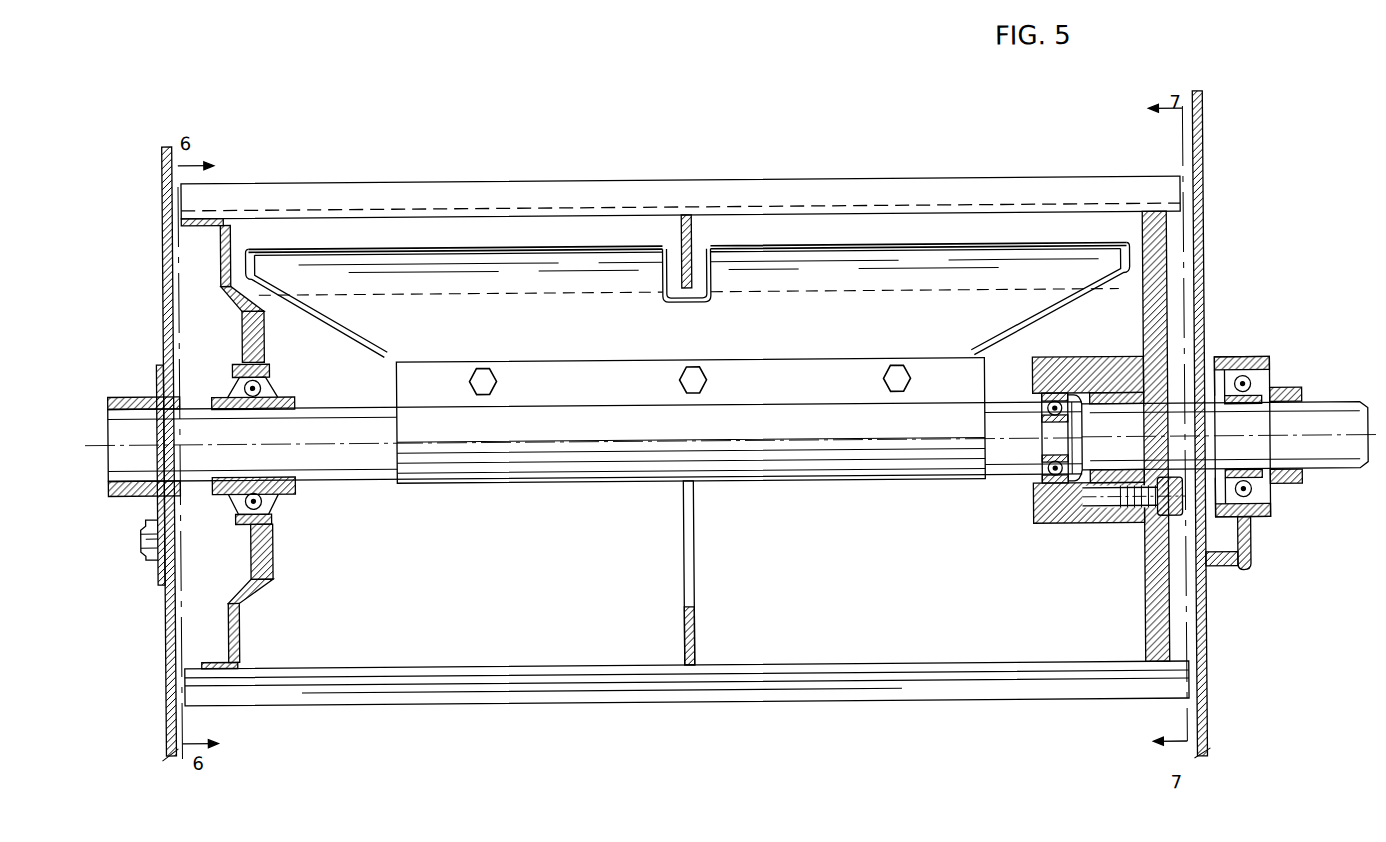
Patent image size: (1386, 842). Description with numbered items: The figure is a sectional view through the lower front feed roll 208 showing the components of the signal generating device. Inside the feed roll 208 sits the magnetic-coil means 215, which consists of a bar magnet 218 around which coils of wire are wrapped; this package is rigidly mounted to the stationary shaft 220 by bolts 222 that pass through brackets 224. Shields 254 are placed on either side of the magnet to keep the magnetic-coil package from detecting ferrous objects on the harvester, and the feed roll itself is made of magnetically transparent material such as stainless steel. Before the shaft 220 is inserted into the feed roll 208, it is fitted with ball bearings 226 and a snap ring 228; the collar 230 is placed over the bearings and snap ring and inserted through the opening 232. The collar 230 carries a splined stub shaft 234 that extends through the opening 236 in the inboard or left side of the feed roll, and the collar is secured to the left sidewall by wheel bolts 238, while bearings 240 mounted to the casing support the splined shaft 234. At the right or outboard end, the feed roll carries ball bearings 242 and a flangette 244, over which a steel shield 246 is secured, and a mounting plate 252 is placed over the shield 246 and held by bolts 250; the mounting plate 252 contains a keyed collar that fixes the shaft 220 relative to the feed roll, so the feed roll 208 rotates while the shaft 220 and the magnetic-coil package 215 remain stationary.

The feed roll 208 is at (1086, 180).
The magnetic-coil means 215 is at (808, 204).
The bar magnet 218 is at (612, 294).
The stationary shaft 220 is at (584, 442).
The bolts 222 is at (497, 380).
The brackets 224 is at (690, 421).
The ball bearings 226 is at (1040, 482).
The snap ring 228 is at (1070, 488).
The collar 230 is at (1105, 334).
The opening 232 is at (230, 380).
The splined stub shaft 234 is at (1246, 437).
The opening 236 is at (1207, 372).
The wheel bolts 238 is at (1165, 522).
The bearings 240 is at (1262, 500).
The ball bearings 242 is at (268, 503).
The flangette 244 is at (250, 560).
The steel shield 246 is at (234, 596).
The bolts 250 is at (146, 534).
The mounting plate 252 is at (118, 393).
The shields 254 is at (250, 250).